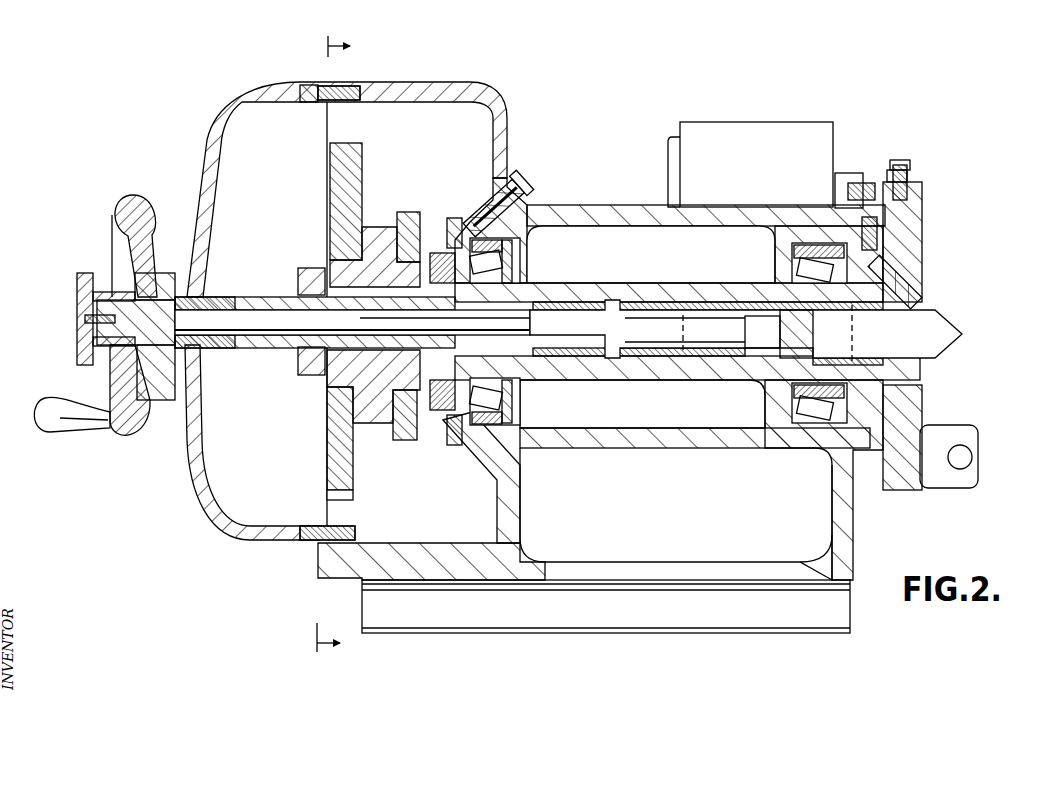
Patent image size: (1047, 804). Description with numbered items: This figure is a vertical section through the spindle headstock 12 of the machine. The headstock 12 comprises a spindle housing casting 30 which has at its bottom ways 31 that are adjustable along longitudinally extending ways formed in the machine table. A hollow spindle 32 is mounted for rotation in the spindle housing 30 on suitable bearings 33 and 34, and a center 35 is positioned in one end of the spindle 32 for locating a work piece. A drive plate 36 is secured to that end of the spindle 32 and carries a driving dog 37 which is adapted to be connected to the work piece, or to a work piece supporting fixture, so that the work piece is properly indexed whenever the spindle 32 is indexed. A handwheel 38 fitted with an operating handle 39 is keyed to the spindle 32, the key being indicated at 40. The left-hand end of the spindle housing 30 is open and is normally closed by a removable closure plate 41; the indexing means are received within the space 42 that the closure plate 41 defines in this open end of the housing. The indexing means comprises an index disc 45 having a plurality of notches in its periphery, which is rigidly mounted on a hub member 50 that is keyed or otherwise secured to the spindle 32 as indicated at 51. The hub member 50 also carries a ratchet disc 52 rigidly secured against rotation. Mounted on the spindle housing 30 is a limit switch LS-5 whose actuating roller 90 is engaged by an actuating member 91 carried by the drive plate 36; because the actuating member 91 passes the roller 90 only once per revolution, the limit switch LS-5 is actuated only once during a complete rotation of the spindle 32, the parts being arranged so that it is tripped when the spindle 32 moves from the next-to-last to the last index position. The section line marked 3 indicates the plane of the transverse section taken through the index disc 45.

The section line 3- 3 is at (340, 345).
The headstock 12 is at (622, 203).
The spindle housing casting 30 is at (563, 205).
The ways 31 is at (797, 626).
The spindle 32 is at (583, 297).
The bearing 33 is at (808, 270).
The bearing 34 is at (495, 260).
The center 35 is at (949, 333).
The drive plate 36 is at (913, 210).
The driving dog 37 is at (968, 440).
The handwheel 38 is at (167, 343).
The operating handle 39 is at (56, 417).
The key 40 is at (160, 297).
The closure plate 41 is at (217, 130).
The space 42 is at (243, 133).
The index disc 45 is at (350, 160).
The hub member 50 is at (378, 228).
The key 51 is at (345, 283).
The ratchet disc 52 is at (412, 222).
The actuating roller 90 is at (870, 188).
The actuating member 91 is at (905, 175).
The limit switch LS-5 is at (742, 138).